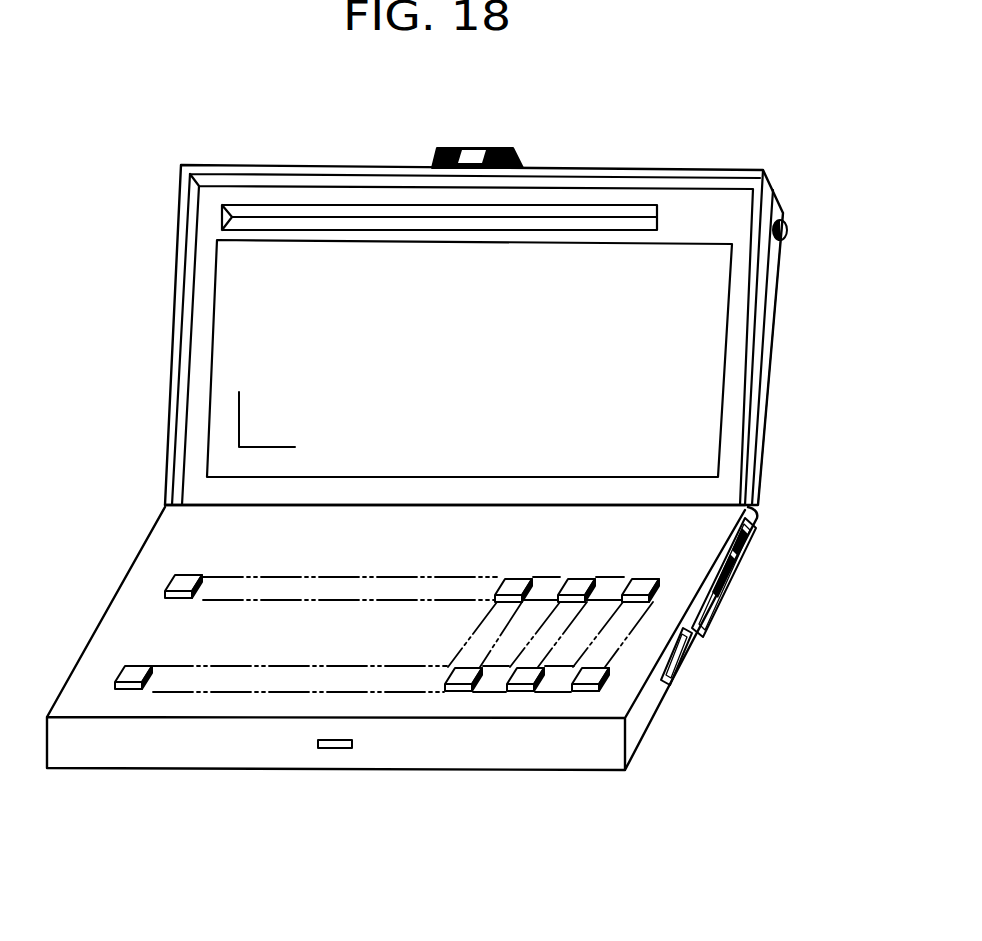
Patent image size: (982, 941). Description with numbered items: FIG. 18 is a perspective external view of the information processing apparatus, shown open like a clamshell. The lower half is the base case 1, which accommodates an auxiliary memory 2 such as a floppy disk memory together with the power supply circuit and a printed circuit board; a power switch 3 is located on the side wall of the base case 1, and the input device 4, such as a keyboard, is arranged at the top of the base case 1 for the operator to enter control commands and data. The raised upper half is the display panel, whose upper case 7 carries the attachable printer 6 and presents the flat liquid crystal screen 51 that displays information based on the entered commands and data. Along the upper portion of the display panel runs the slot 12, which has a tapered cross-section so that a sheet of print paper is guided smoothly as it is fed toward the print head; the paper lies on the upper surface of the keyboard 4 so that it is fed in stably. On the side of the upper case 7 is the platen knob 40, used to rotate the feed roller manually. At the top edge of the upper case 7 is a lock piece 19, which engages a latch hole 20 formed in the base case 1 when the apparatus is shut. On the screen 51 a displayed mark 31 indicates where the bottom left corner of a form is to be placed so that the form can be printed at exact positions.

The base case 1 is at (652, 730).
The auxiliary memory 2 is at (758, 528).
The power switch 3 is at (689, 665).
The input device 4 is at (449, 694).
The printer 6 is at (779, 316).
The upper case 7 is at (764, 425).
The slot 12 is at (284, 208).
The lock piece 19 is at (505, 147).
The latch hole 20 is at (334, 749).
The displayed mark 31 is at (228, 425).
The platen knob 40 is at (788, 232).
The liquid crystal screen 51 is at (669, 262).